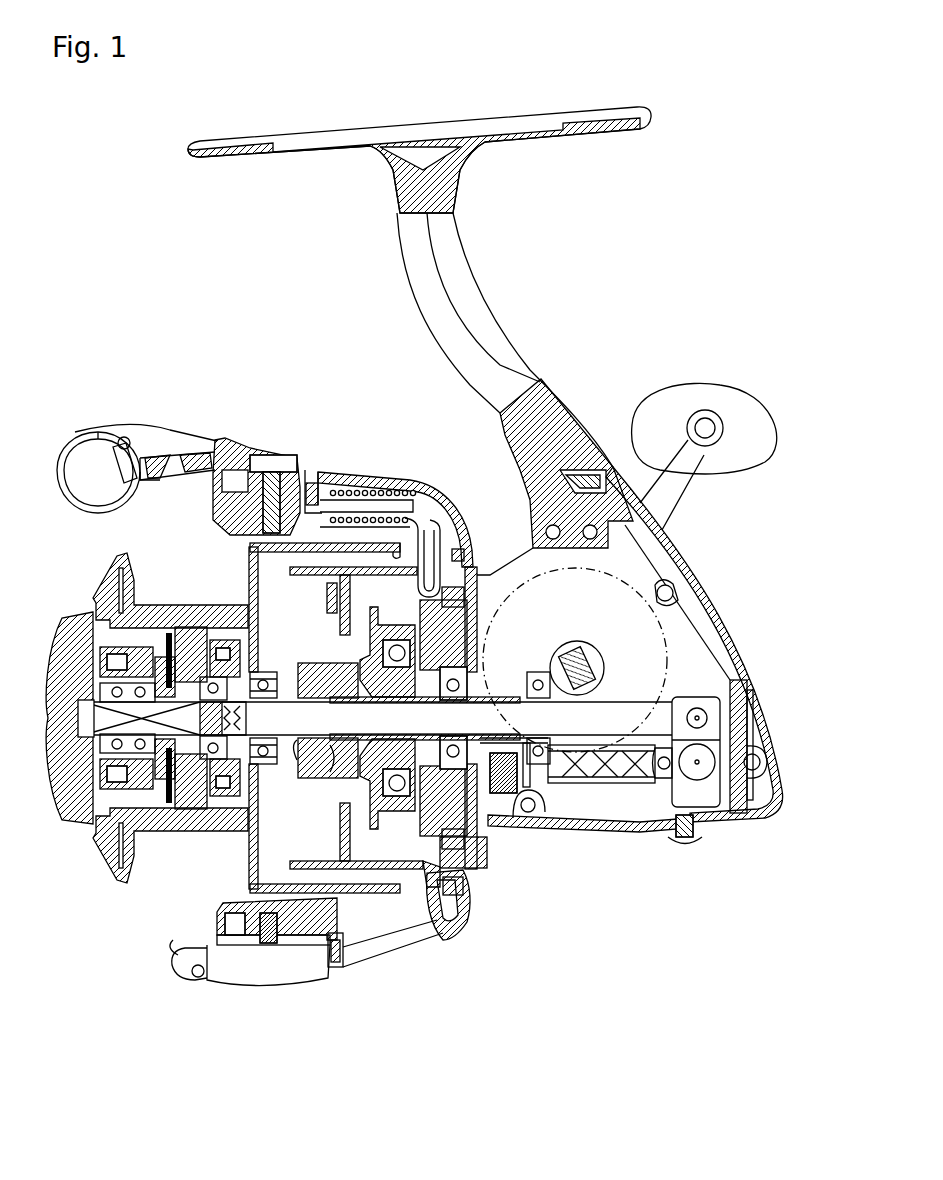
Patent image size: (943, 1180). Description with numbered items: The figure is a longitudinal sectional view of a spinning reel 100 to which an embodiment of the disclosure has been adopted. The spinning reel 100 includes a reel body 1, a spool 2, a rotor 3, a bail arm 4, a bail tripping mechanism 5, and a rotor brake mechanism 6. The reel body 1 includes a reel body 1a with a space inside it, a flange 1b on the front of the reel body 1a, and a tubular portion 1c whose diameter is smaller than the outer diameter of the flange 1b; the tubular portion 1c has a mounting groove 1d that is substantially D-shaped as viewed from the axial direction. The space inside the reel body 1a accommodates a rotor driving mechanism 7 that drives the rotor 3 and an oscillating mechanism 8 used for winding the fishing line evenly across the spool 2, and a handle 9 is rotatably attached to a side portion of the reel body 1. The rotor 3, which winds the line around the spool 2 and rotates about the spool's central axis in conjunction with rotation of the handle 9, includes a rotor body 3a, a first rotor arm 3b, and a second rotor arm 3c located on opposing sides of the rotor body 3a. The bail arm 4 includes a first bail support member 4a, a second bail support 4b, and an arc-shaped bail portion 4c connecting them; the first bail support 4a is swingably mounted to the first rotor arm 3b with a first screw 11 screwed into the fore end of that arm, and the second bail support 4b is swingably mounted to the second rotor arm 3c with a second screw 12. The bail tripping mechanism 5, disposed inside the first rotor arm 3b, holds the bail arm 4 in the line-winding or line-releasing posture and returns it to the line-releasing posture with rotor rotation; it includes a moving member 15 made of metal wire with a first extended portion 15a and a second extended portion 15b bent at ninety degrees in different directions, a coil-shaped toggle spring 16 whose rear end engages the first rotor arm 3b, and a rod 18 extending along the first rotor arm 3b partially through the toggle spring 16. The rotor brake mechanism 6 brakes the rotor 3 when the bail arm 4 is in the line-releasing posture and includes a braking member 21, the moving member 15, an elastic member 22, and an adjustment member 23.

The spinning reel 100 is at (166, 307).
The reel body 1 is at (565, 391).
The reel body 1a is at (719, 640).
The flange 1b is at (478, 588).
The tubular portion 1c is at (460, 937).
The mounting groove 1d is at (455, 880).
The spool 2 is at (173, 833).
The rotor 3 is at (363, 877).
The rotor body 3a is at (398, 878).
The first rotor arm 3b is at (292, 455).
The second rotor arm 3c is at (338, 968).
The bail arm 4 is at (111, 418).
The first bail support member 4a is at (190, 438).
The second bail support 4b is at (237, 962).
The bail portion 4c is at (130, 440).
The bail tripping mechanism 5 is at (352, 478).
The rotor brake mechanism 6 is at (455, 588).
The rotor driving mechanism 7 is at (504, 795).
The oscillating mechanism 8 is at (628, 799).
The handle 9 is at (744, 387).
The first screw 11 is at (270, 458).
The second screw 12 is at (268, 945).
The moving member 15 is at (432, 500).
The first extended portion 15a is at (328, 598).
The second extended portion 15b is at (250, 545).
The toggle spring 16 is at (385, 488).
The rod 18 is at (310, 478).
The braking member 21 is at (477, 610).
The elastic member 22 is at (424, 530).
The adjustment member 23 is at (457, 549).